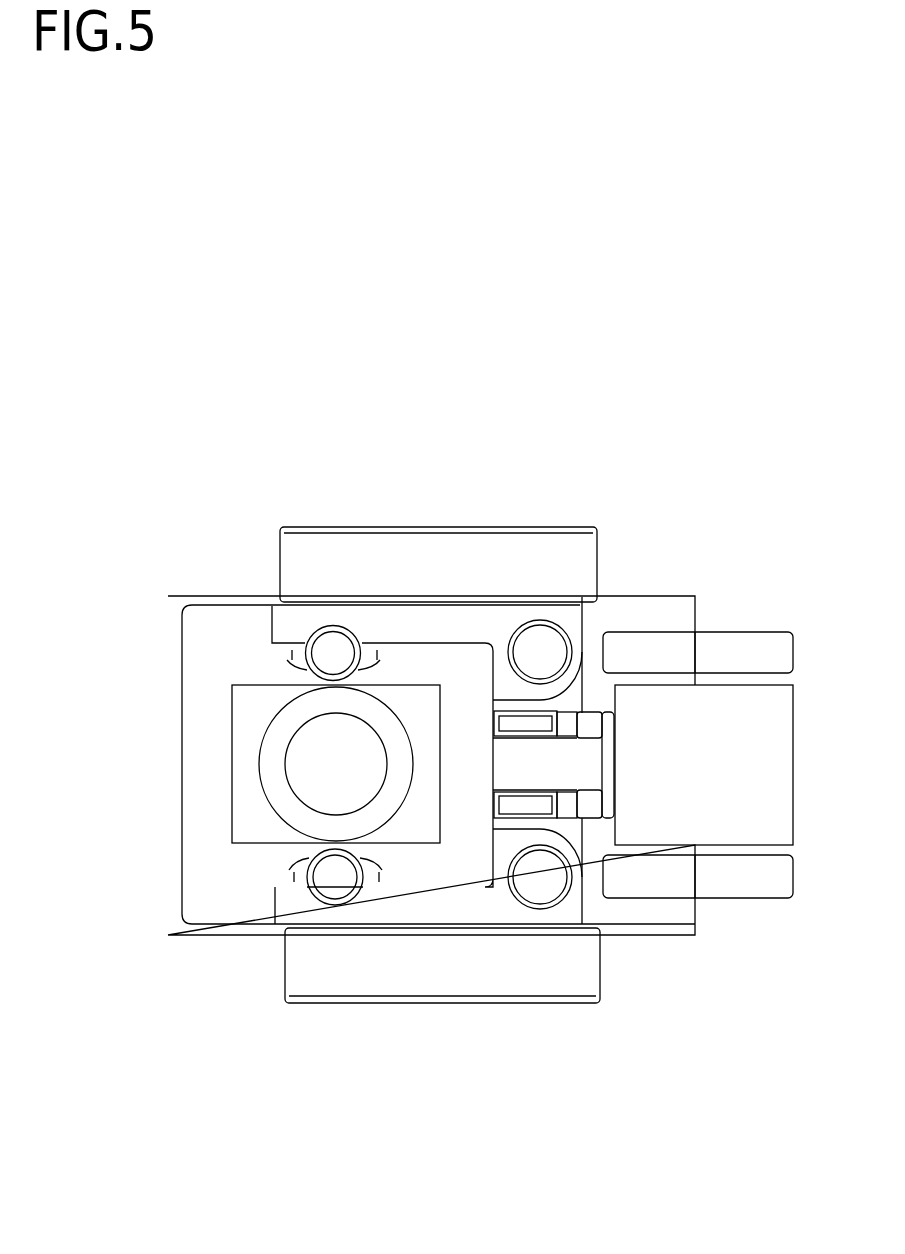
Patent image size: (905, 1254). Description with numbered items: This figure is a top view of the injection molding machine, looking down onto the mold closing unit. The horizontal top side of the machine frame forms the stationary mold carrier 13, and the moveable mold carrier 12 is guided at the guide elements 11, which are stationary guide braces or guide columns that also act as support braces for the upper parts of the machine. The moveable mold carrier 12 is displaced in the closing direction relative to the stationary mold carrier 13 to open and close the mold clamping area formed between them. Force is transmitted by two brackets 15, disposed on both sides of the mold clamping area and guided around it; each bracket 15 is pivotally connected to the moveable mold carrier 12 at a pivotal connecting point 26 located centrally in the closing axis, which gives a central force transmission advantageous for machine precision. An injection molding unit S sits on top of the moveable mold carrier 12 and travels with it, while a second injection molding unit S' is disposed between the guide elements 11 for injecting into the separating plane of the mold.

The guide elements 11 is at (540, 653).
The moveable mold carrier 12 is at (243, 907).
The stationary mold carrier 13 is at (168, 862).
The bracket 15 is at (429, 541).
The pivotal connecting point 26 is at (325, 525).
The injection molding unit S is at (276, 766).
The injection molding unit S' is at (698, 765).